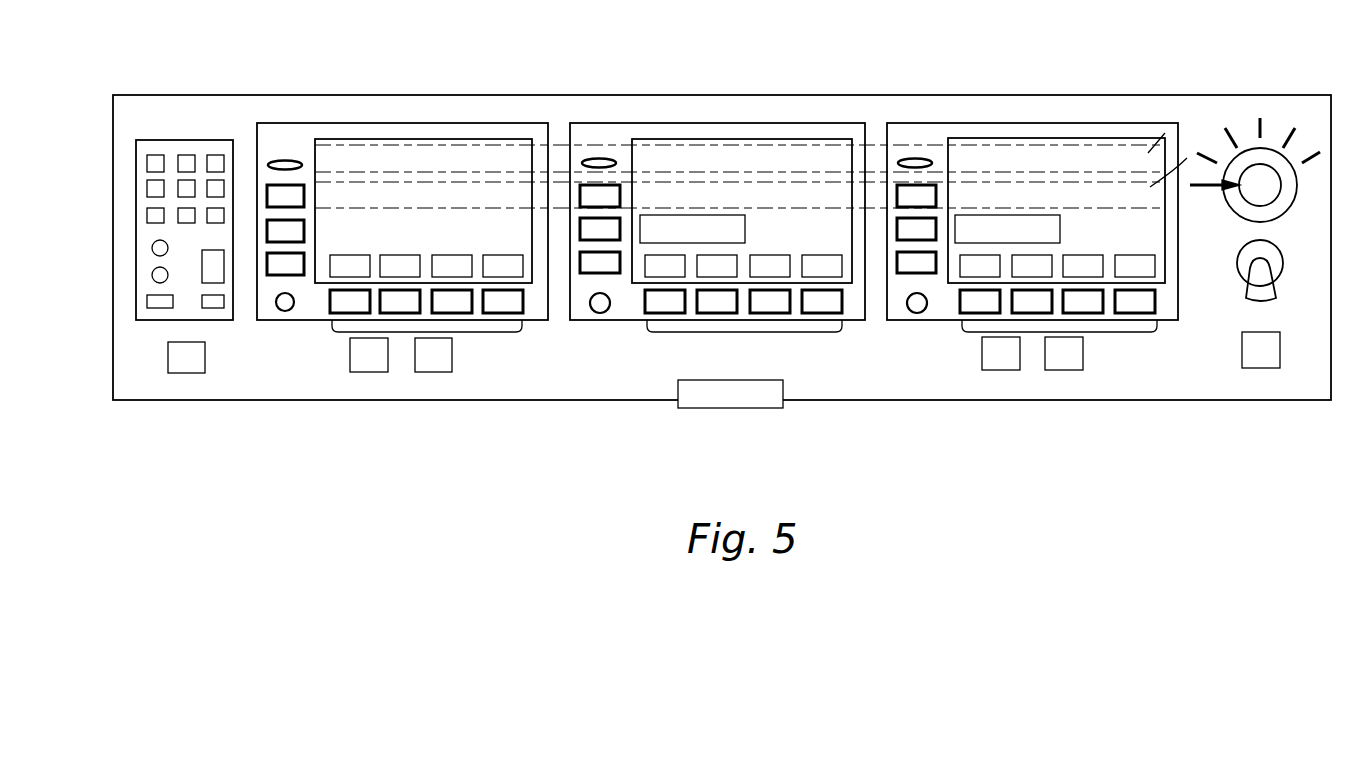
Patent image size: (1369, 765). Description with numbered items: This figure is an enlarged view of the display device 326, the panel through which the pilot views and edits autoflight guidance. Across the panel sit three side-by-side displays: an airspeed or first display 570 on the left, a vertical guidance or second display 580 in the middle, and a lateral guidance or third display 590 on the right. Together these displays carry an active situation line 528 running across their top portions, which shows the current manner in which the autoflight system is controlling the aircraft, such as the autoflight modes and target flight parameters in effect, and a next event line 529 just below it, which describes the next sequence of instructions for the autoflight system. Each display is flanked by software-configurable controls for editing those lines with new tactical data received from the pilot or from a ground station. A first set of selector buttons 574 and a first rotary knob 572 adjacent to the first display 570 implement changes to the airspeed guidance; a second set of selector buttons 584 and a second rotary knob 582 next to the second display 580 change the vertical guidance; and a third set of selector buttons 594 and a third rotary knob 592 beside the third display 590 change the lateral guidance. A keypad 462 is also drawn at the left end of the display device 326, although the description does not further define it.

The display device 326 is at (1103, 95).
The alphanumeric keypad 462 is at (180, 139).
The first display 570 is at (363, 139).
The first rotary knob 572 is at (285, 313).
The first set of selector buttons 574 is at (258, 185).
The second display 580 is at (680, 139).
The second rotary knob 582 is at (600, 313).
The second set of selector buttons 584 is at (568, 184).
The third display 590 is at (995, 139).
The third rotary knob 592 is at (917, 313).
The third set of selector buttons 594 is at (886, 184).
The active situation line 528 is at (1163, 125).
The next event line 529 is at (1187, 158).